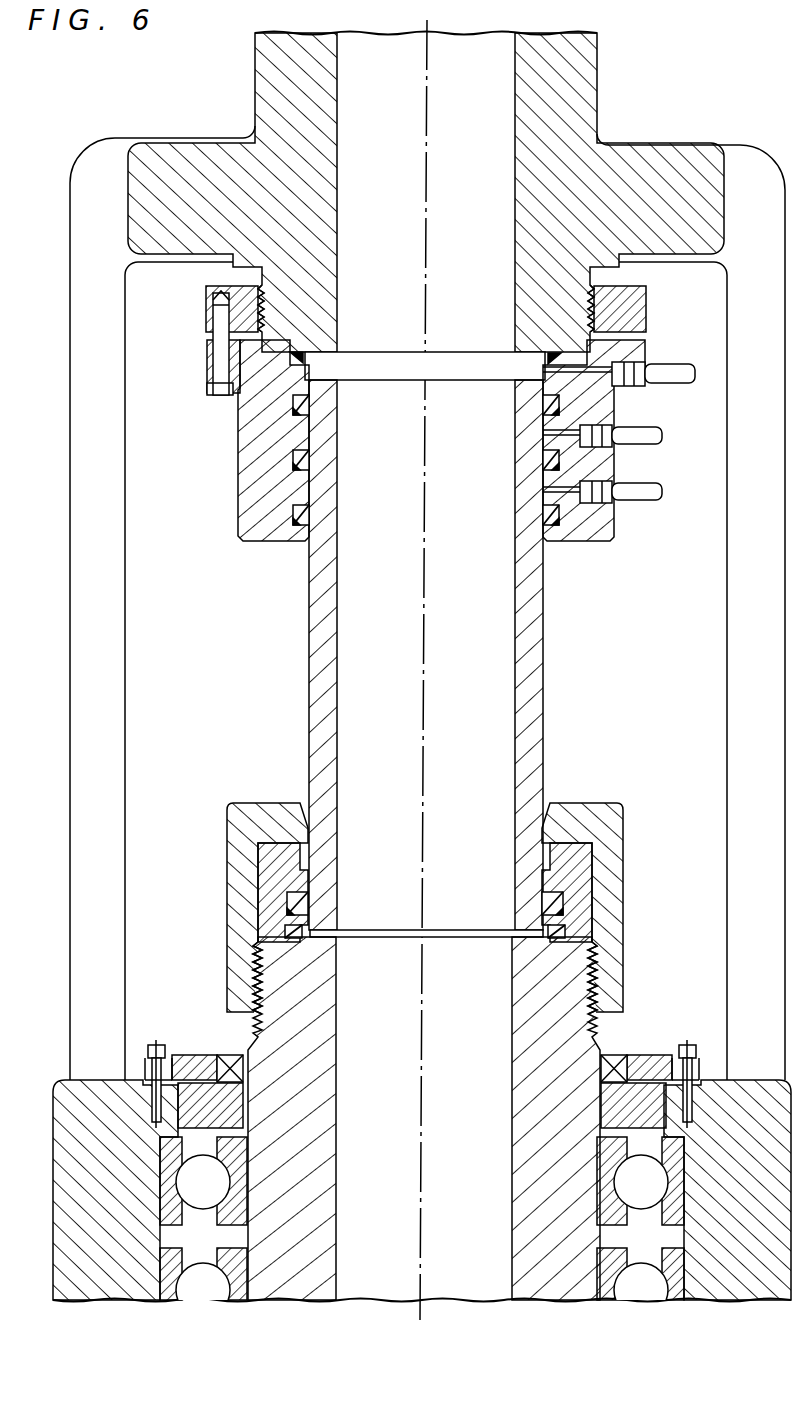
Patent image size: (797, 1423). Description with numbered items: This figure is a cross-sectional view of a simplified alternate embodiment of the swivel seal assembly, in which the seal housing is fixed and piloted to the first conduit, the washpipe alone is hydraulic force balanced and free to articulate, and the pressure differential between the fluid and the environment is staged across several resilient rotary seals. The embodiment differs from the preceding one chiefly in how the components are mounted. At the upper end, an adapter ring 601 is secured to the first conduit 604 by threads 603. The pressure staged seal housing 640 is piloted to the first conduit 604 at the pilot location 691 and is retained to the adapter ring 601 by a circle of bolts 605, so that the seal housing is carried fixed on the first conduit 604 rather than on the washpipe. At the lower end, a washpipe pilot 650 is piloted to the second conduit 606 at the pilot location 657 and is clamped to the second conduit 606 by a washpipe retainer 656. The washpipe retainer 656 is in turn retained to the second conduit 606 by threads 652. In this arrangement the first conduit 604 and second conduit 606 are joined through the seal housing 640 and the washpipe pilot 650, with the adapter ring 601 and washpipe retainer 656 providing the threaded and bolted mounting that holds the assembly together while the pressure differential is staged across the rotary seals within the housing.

The first conduit 604 is at (303, 192).
The threads 603 is at (262, 316).
The adapter ring 601 is at (212, 312).
The pilot location 691 is at (262, 339).
The circle of bolts 605 is at (207, 393).
The pressure staged seal housing 640 is at (238, 460).
The washpipe retainer 656 is at (243, 803).
The washpipe pilot 650 is at (268, 877).
The pilot location 657 is at (275, 940).
The threads 652 is at (254, 997).
The second conduit 606 is at (287, 1045).